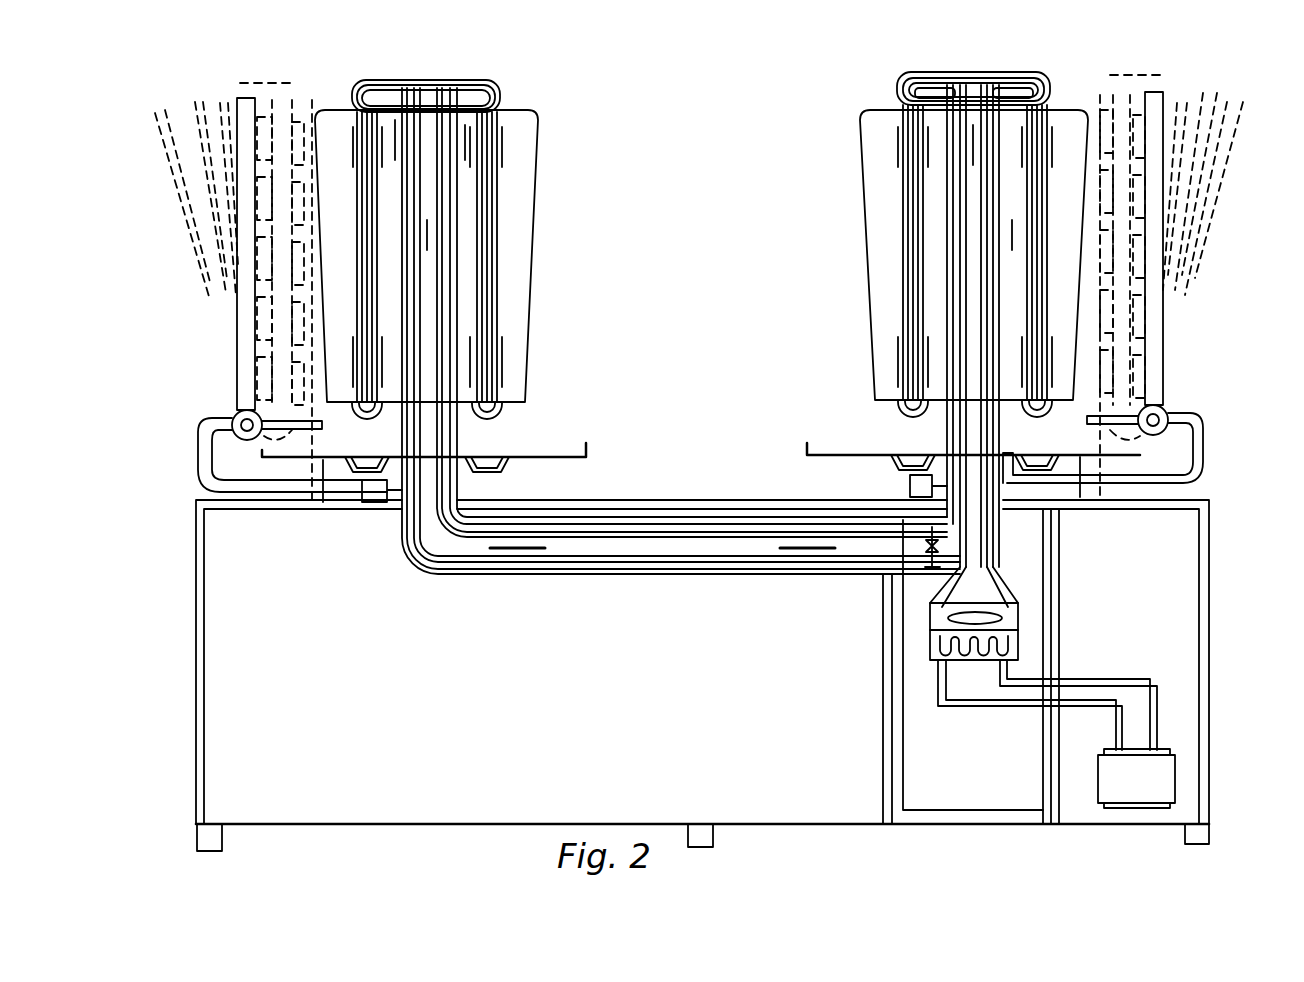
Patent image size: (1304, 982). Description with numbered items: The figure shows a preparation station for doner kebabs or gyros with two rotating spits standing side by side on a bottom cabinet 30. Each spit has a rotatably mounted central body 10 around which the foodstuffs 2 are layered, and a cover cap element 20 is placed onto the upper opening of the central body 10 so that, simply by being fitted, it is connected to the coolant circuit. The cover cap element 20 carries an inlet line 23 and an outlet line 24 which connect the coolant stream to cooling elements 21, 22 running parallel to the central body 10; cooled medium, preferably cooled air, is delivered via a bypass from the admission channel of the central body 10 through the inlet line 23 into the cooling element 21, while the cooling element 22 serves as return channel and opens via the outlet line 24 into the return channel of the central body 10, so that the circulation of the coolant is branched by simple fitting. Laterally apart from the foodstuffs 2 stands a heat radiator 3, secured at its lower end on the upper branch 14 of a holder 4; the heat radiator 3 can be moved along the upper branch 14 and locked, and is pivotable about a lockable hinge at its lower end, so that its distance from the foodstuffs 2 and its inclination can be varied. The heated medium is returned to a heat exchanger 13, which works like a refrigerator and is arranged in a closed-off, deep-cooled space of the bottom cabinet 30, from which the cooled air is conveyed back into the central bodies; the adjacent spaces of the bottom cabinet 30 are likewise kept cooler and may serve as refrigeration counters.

The foodstuffs 2 is at (523, 148).
The heat radiator 3 is at (242, 298).
The holder 4 is at (200, 468).
The central body 10 is at (490, 84).
The heat exchanger 13 is at (930, 648).
The upper branch 14 is at (208, 422).
The cover cap element 20 is at (413, 80).
The cooling element 21 is at (495, 292).
The cooling element 22 is at (478, 220).
The inlet line 23 is at (940, 77).
The outlet line 24 is at (1008, 82).
The bottom cabinet 30 is at (1207, 620).